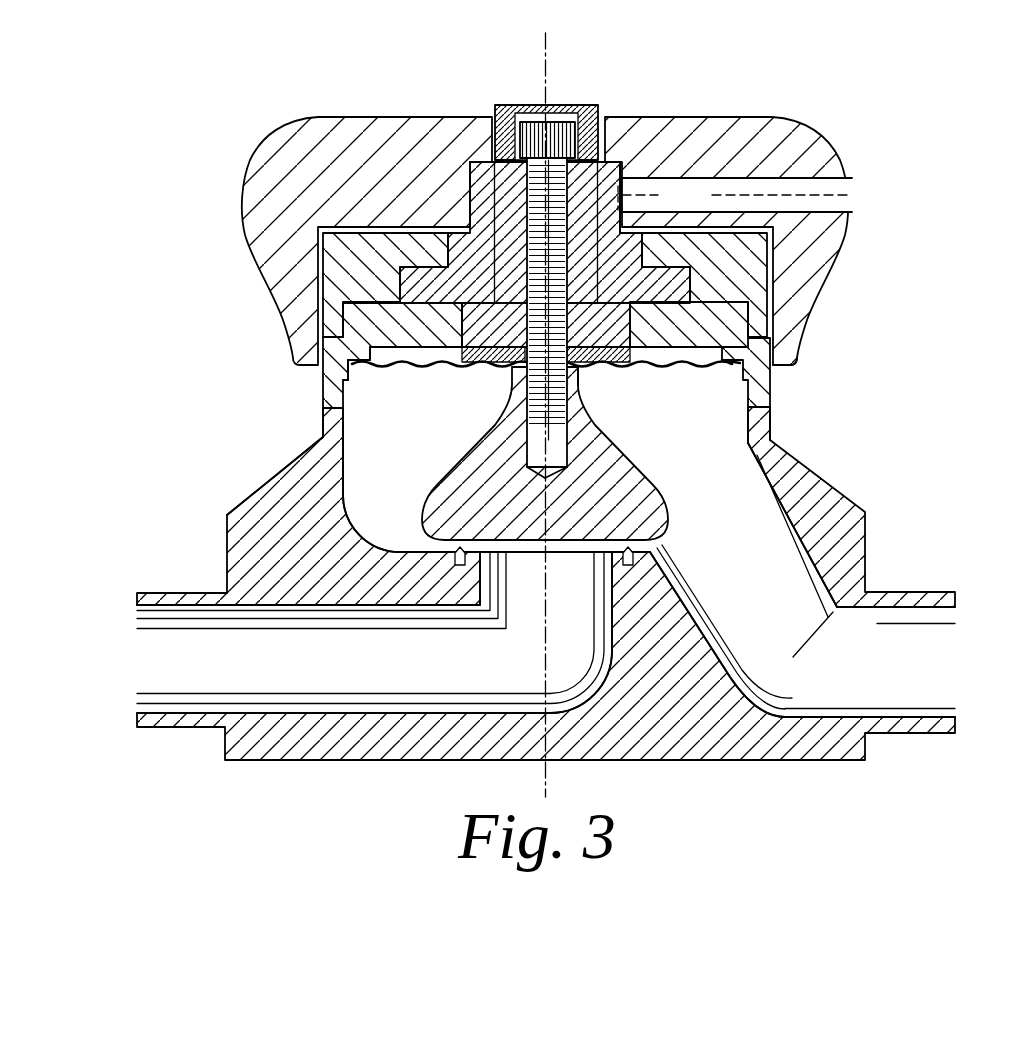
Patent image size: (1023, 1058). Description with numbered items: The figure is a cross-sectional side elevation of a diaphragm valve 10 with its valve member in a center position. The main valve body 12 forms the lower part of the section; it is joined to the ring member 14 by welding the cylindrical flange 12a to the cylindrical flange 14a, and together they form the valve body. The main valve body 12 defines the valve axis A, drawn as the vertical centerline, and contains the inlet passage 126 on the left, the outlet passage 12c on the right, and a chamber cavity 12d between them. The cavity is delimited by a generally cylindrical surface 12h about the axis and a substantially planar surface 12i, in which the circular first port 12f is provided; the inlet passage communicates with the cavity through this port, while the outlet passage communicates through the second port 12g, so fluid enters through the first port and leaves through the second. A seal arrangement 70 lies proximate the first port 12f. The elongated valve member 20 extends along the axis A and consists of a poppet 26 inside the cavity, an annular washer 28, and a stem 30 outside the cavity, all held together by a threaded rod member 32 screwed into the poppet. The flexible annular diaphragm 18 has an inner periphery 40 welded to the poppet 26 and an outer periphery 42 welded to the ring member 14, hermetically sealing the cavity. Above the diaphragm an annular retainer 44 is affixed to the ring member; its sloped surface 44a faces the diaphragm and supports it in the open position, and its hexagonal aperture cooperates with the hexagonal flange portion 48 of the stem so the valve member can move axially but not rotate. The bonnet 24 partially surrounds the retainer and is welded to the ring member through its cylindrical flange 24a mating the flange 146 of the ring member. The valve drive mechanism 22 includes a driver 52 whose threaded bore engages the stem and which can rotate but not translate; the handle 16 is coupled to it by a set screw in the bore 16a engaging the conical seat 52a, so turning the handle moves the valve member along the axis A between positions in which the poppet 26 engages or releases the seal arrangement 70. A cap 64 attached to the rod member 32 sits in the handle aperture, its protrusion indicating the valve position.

The diaphragm valve 10 is at (540, 399).
The main valve body 12 is at (828, 480).
The cylindrical flange 12a is at (323, 420).
The outlet passage 12c is at (912, 668).
The chamber cavity 12d is at (702, 444).
The first port 12f is at (580, 555).
The second port 12g is at (702, 482).
The cylindrical surface 12h is at (350, 440).
The planar surface 12i is at (397, 547).
The inlet passage 126 is at (190, 670).
The ring member 14 is at (778, 386).
The cylindrical flange 14a is at (328, 383).
The handle skirt bottom 146 is at (792, 354).
The handle 16 is at (805, 148).
The bore 16a is at (836, 185).
The flexible annular diaphragm 18 is at (670, 366).
The elongated valve member 20 is at (493, 92).
The valve drive mechanism 22 is at (693, 92).
The bonnet 24 is at (772, 262).
The cylindrical flange 24a is at (770, 324).
The poppet 26 is at (475, 462).
The annular washer 28 is at (500, 368).
The stem 30 is at (505, 195).
The threaded rod member 32 is at (594, 116).
The inner periphery 40 is at (582, 372).
The outer periphery 42 is at (736, 363).
The annular retainer 44 is at (320, 328).
The sloped surface 44a is at (436, 367).
The hexagonal flange portion 48 is at (600, 360).
The driver 52 is at (632, 117).
The conical seat 52a is at (734, 198).
The cap 64 is at (513, 106).
The seal arrangement 70 is at (430, 543).
The valve axis A is at (547, 55).